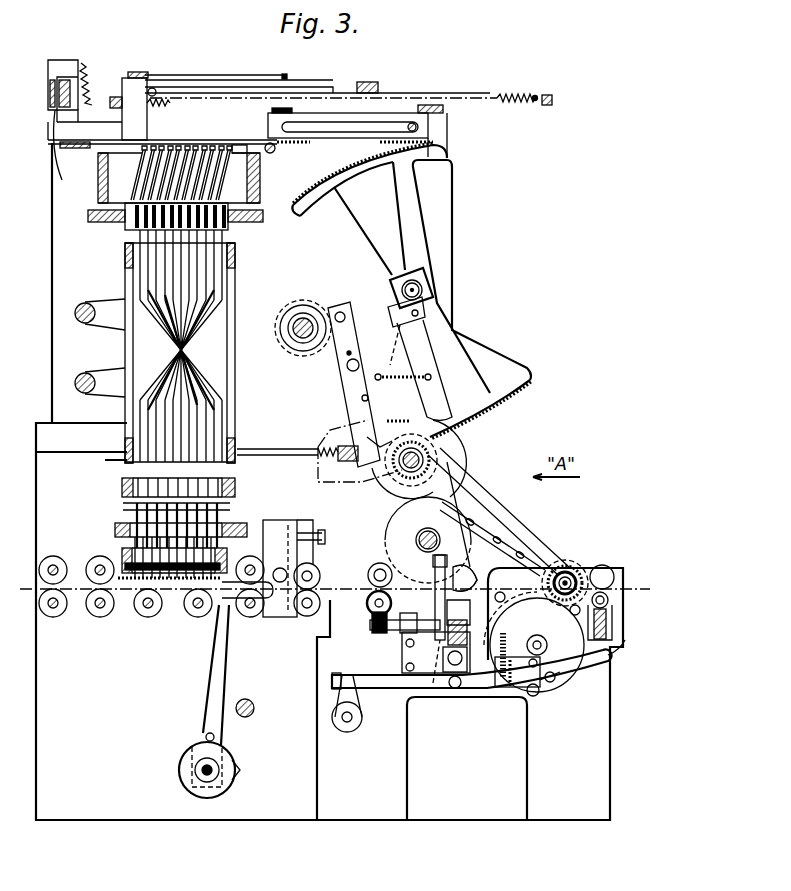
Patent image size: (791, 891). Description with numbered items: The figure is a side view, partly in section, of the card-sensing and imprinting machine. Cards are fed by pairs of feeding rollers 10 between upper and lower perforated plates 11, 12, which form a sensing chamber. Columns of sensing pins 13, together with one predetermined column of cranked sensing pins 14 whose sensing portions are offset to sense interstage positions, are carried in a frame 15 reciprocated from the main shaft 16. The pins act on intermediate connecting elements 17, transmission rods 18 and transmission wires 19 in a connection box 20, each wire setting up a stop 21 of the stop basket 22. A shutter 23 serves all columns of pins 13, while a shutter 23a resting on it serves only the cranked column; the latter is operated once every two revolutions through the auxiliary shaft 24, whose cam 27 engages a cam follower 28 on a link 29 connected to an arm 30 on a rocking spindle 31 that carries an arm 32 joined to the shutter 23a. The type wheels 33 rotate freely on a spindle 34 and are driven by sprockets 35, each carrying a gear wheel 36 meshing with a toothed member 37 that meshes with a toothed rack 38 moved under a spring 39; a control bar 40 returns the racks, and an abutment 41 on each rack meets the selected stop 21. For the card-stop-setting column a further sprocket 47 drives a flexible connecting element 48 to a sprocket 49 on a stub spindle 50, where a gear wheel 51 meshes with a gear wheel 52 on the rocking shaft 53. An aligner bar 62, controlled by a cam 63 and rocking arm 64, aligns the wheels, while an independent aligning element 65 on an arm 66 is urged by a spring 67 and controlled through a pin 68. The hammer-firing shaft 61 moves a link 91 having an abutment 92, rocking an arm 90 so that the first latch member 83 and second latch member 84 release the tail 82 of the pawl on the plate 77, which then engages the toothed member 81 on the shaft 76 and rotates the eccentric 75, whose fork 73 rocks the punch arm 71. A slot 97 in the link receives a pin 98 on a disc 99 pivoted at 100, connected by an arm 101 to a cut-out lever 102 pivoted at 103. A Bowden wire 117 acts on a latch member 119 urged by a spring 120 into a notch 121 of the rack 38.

The feeding rollers 10 is at (86, 602).
The upper perforated plate 11 is at (130, 605).
The lower perforated plate 12 is at (138, 607).
The sensing pins 13 is at (147, 595).
The cranked sensing pins 14 is at (218, 560).
The frame 15 is at (205, 615).
The main shaft 16 is at (243, 700).
The intermediate connecting elements 17 is at (224, 520).
The transmission rods 18 is at (227, 507).
The transmission wires 19 is at (255, 512).
The connection box 20 is at (232, 408).
The stop 21 is at (147, 175).
The stop basket 22 is at (250, 188).
The shutter 23 is at (115, 530).
The shutter 23a is at (262, 523).
The auxiliary shaft 24 is at (202, 767).
The cam 27 is at (180, 772).
The cam follower 28 is at (205, 736).
The link 29 is at (217, 660).
The arm 30 is at (232, 600).
The rocking spindle 31 is at (264, 618).
The arm 32 is at (287, 592).
The type wheels 33 is at (437, 533).
The spindle 34 is at (432, 557).
The sprockets 35 is at (457, 478).
The gear wheel 36 is at (433, 447).
The toothed members 37 is at (518, 373).
The toothed rack 38 is at (422, 133).
The spring 39 is at (520, 99).
The control bar 40 is at (140, 142).
The abutment 41 is at (145, 140).
The sprocket 47 is at (437, 460).
The flexible connecting element 48 is at (530, 535).
The sprocket 49 is at (545, 548).
The stub spindle 50 is at (560, 566).
The gear wheel 51 is at (618, 597).
The gear wheel 52 is at (610, 622).
The rocking shaft 53 is at (537, 635).
The hammer-firing shaft 61 is at (347, 720).
The aligner bar 62 is at (360, 470).
The cam 63 is at (313, 314).
The rocking arm 64 is at (342, 337).
The aligning element 65 is at (313, 443).
The arm 66 is at (377, 368).
The spring 67 is at (387, 383).
The pin 68 is at (353, 420).
The arm 71 is at (470, 567).
The fork 73 is at (382, 598).
The eccentric 75 is at (437, 620).
The shaft 76 is at (370, 620).
The plate 77 is at (460, 590).
The toothed member 81 is at (445, 623).
The tail 82 is at (466, 640).
The first latch member 83 is at (443, 650).
The second latch member 84 is at (465, 688).
The arm 90 is at (433, 683).
The link 91 is at (393, 688).
The abutment 92 is at (378, 688).
The slot 97 is at (492, 675).
The pin 98 is at (498, 684).
The disc 99 is at (505, 692).
The pivot 100 is at (527, 692).
The arm 101 is at (538, 697).
The cut-out lever 102 is at (587, 668).
The pivot 103 is at (552, 682).
The Bowden wire 117 is at (60, 166).
The latch member 119 is at (53, 62).
The spring 120 is at (84, 68).
The notch 121 is at (71, 124).